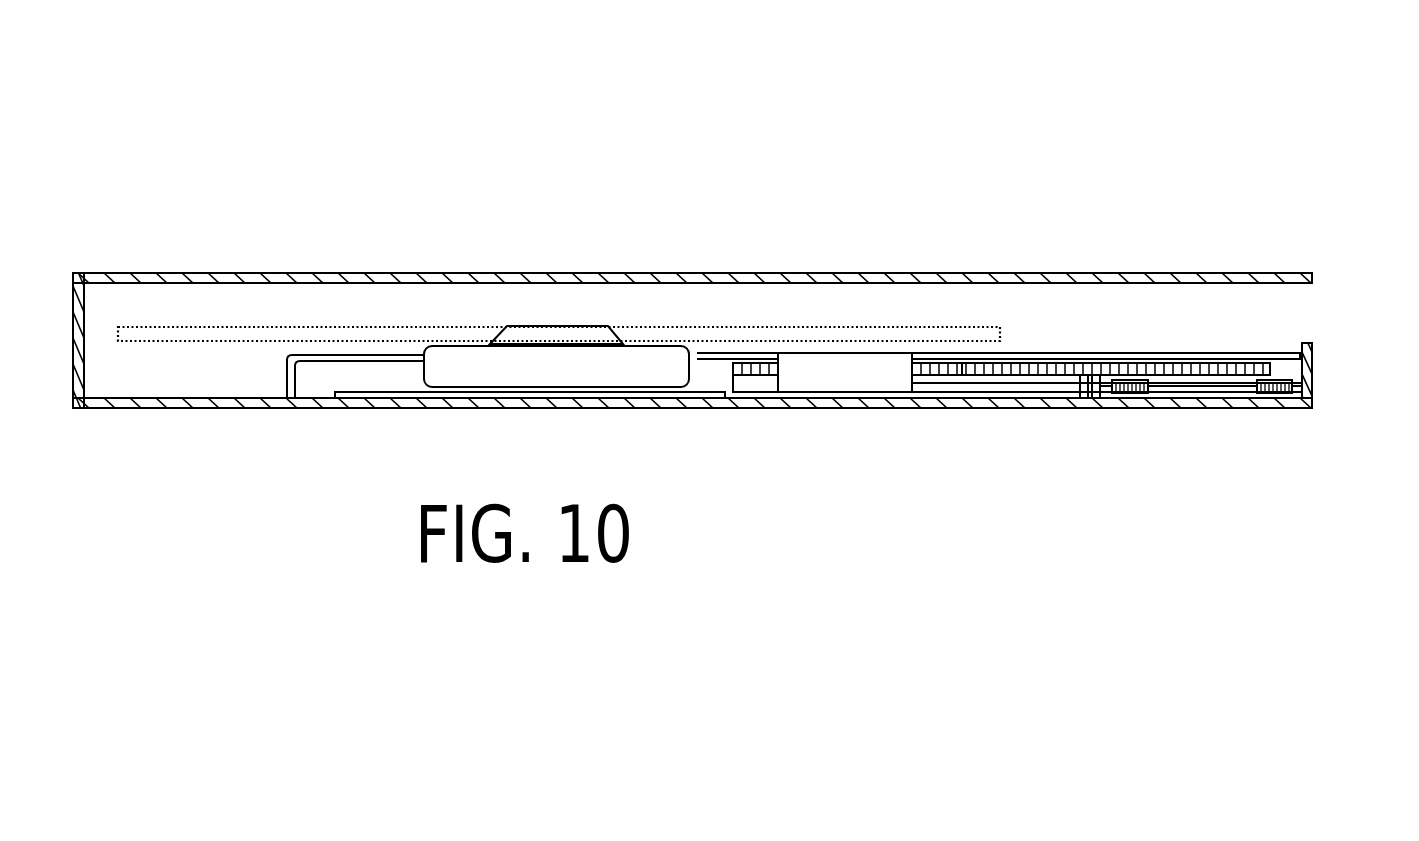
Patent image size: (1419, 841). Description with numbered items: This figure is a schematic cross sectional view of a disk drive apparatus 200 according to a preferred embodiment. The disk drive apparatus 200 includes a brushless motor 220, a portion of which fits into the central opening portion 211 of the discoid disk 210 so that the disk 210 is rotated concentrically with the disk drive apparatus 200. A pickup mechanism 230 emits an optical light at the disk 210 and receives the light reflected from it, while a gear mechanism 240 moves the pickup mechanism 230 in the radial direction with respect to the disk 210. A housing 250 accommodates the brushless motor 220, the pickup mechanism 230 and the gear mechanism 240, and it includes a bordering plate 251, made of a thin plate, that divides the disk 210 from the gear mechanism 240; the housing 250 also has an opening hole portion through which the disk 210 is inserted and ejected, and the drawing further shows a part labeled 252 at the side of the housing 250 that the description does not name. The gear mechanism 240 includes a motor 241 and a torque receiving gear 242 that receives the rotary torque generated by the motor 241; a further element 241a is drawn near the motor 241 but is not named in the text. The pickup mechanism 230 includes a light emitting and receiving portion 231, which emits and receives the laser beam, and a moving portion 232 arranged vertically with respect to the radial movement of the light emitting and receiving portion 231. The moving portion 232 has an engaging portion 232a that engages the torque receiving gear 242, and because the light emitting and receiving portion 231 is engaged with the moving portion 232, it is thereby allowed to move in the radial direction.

The disk drive apparatus 200 is at (200, 95).
The disk 210 is at (698, 316).
The central opening portion 211 is at (620, 338).
The brushless motor 220 is at (412, 376).
The pickup mechanism 230 is at (842, 397).
The light emitting and receiving portion 231 is at (812, 380).
The moving portion 232 is at (1006, 385).
The engaging portion 232a is at (933, 376).
The gear mechanism 240 is at (1217, 397).
The motor 241 is at (1173, 374).
The connector 241a is at (1278, 402).
The torque receiving gear 242 is at (1088, 399).
The housing 250 is at (343, 262).
The bordering plate 251 is at (1122, 362).
The side wall 252 is at (1300, 315).